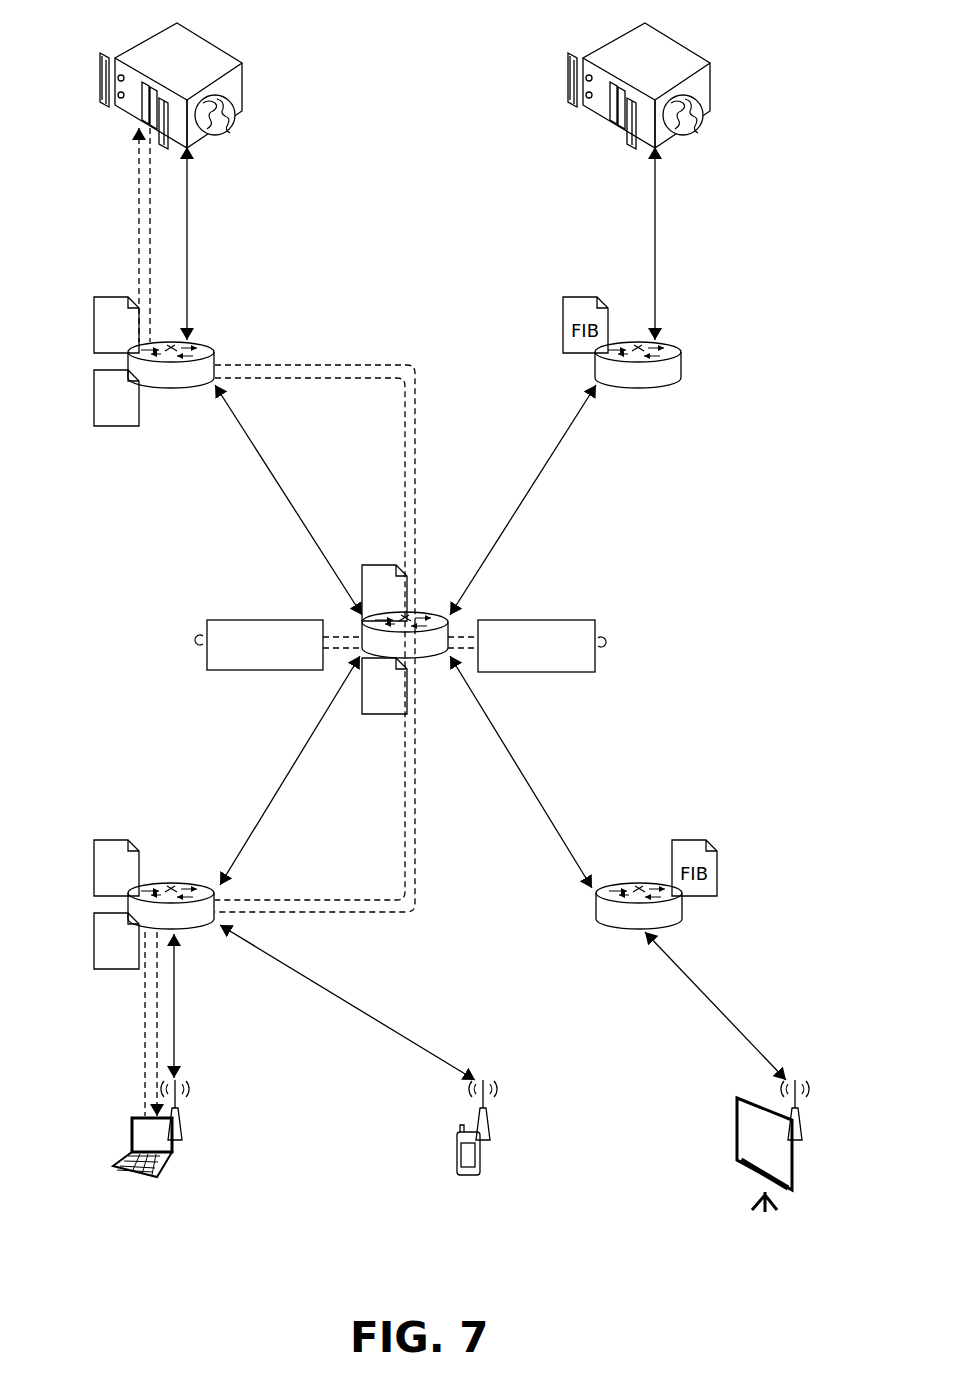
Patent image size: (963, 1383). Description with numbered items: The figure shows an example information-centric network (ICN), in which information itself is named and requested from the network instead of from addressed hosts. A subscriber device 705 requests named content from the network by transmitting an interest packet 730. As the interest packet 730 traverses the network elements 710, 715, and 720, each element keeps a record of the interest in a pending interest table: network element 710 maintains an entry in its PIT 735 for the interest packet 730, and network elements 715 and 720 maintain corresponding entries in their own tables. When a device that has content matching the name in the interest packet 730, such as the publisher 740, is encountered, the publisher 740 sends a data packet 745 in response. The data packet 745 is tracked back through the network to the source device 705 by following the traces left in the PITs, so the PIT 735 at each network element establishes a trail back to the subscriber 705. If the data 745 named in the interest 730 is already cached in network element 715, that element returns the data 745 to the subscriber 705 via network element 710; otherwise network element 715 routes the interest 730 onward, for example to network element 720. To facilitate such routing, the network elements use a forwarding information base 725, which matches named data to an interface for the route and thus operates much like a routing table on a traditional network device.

The device 705 is at (131, 1119).
The network element 710 is at (187, 932).
The network element 715 is at (423, 658).
The network element 720 is at (215, 350).
The forwarding information base 725 is at (94, 870).
The interest packet 730 is at (265, 620).
The pending interest table 735 is at (94, 940).
The publisher 740 is at (141, 46).
The data packet 745 is at (560, 620).